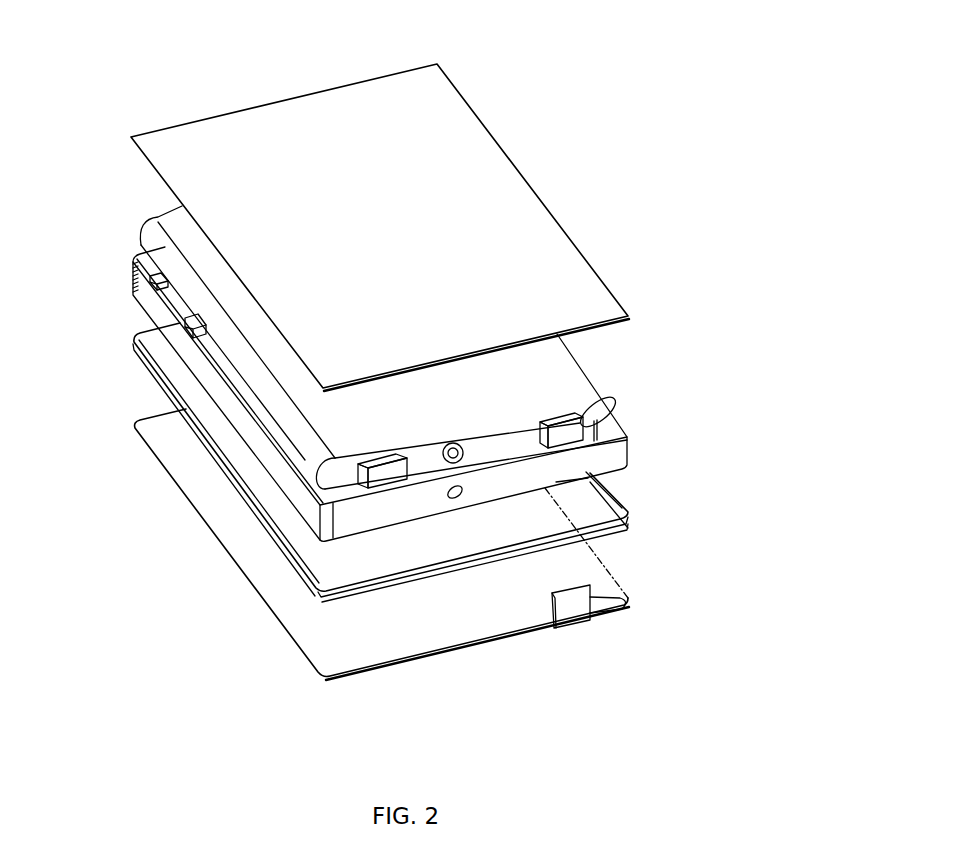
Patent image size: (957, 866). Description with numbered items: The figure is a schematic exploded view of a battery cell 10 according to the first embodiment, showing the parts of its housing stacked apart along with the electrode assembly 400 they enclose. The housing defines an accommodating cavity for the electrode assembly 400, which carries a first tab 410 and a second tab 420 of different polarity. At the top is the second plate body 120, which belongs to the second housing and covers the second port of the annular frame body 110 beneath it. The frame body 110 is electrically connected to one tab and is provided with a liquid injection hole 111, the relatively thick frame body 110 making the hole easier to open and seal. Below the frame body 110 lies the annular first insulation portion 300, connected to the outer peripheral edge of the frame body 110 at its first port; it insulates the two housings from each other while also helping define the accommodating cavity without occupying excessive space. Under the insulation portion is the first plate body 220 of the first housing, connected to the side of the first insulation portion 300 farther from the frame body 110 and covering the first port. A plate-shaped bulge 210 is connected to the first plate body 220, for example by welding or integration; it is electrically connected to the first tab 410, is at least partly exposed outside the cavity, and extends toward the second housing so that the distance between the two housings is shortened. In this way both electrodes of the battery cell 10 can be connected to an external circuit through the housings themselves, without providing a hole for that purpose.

The battery cell 10 is at (550, 43).
The second plate body 120 is at (513, 193).
The electrode assembly 400 is at (369, 377).
The first tab 410 is at (358, 487).
The second tab 420 is at (610, 398).
The frame body 110 is at (427, 442).
The liquid injection hole 111 is at (443, 503).
The first insulation portion 300 is at (640, 512).
The bulge 210 is at (628, 601).
The first plate body 220 is at (393, 633).